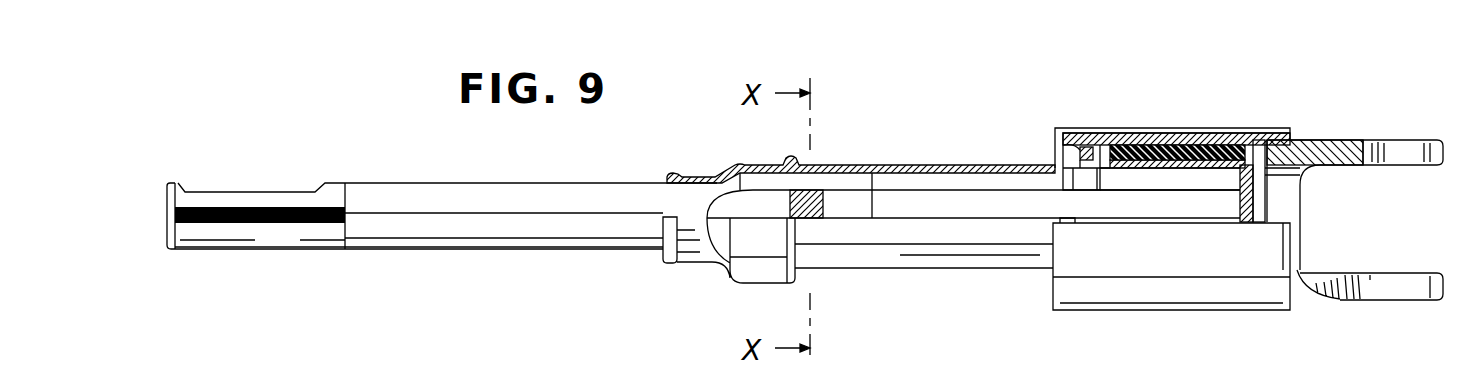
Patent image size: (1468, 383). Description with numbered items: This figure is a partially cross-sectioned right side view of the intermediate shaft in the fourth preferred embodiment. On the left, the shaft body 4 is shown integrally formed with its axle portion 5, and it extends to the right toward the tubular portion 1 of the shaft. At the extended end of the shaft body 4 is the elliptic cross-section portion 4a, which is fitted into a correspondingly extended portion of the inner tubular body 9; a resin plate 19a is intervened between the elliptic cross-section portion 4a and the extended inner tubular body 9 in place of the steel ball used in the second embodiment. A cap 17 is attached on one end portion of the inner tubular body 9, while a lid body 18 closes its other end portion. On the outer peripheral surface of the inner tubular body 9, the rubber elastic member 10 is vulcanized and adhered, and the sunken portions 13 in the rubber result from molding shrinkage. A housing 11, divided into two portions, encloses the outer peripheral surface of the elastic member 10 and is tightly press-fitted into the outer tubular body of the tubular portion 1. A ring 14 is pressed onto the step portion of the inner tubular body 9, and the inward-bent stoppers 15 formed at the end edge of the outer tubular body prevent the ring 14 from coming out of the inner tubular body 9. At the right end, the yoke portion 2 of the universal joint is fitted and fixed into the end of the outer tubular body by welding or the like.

The tubular portion 1 is at (1211, 110).
The yoke portion 2 is at (1318, 150).
The shaft body 4 is at (588, 183).
The elliptic cross-section portion 4a is at (862, 207).
The axle portion 5 is at (291, 226).
The inner tubular body 9 is at (1003, 165).
The elastic member 10 is at (1207, 168).
The housing 11 is at (1166, 132).
The sunken portions 13 is at (1113, 140).
The ring 14 is at (1091, 147).
The stopper 15 is at (1060, 128).
The cap 17 is at (758, 163).
The lid body 18 is at (1246, 222).
The resin plate 19a is at (810, 218).